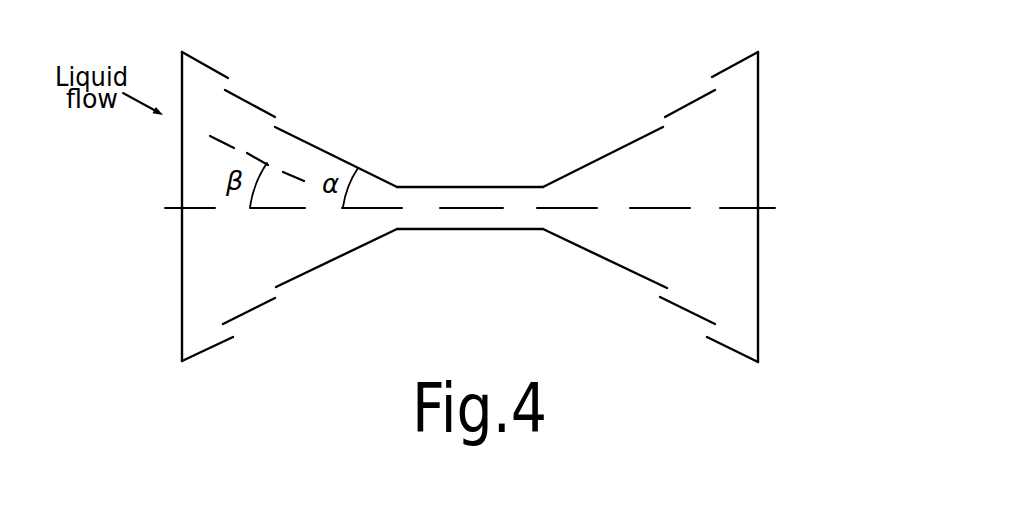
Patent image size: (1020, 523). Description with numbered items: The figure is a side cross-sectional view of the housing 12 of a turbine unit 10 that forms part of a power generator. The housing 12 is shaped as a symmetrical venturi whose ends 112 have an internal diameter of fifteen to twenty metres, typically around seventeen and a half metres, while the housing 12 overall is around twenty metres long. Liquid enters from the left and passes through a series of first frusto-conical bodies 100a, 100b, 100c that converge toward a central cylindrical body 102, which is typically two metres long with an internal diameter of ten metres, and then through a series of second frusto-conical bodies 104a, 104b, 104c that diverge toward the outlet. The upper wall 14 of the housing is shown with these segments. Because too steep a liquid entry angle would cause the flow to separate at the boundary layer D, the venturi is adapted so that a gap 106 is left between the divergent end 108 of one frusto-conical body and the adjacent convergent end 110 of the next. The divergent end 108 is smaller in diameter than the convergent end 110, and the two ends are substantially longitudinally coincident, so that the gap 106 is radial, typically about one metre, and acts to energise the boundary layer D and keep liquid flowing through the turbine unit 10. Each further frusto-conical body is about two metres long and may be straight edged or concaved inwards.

The turbine unit 10 is at (391, 266).
The housing 12 is at (597, 257).
The upper channel wall 14 is at (632, 199).
The first frusto-conical body 100a is at (372, 168).
The first frusto-conical body 100b is at (263, 103).
The first frusto-conical body 100c is at (211, 60).
The cylindrical body 102 is at (493, 185).
The second frusto-conical body 104a is at (615, 148).
The second frusto-conical body 104b is at (692, 102).
The second frusto-conical body 104c is at (727, 63).
The gap 106 is at (230, 82).
The divergent end 108 is at (668, 288).
The convergent end 110 is at (660, 297).
The ends of the venturi 112 is at (182, 330).
The boundary layer D is at (655, 147).